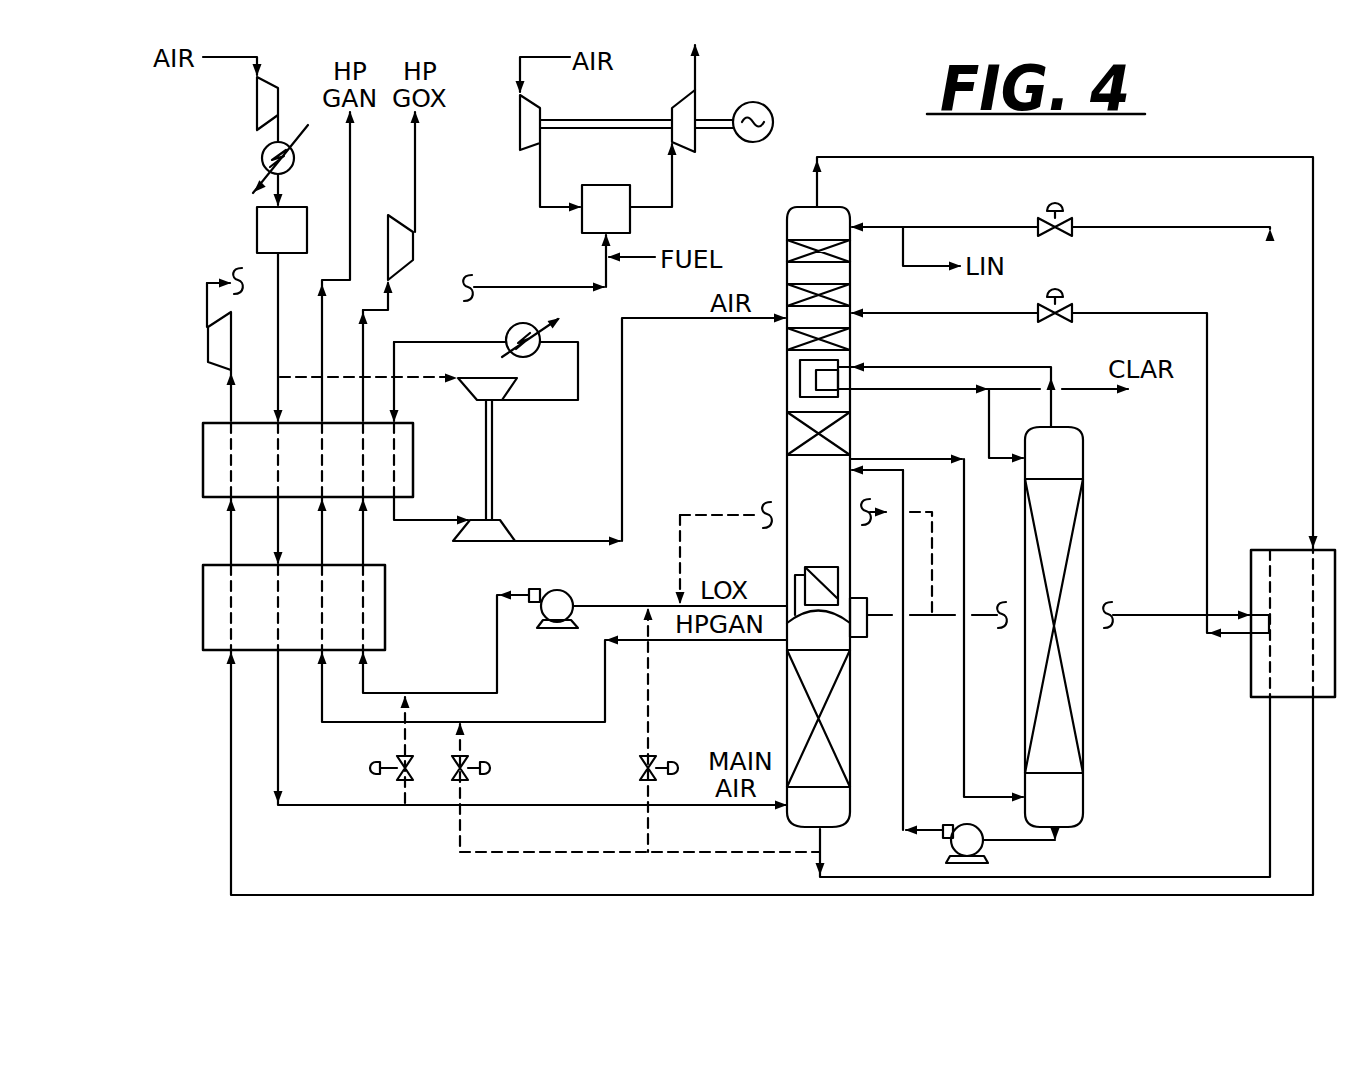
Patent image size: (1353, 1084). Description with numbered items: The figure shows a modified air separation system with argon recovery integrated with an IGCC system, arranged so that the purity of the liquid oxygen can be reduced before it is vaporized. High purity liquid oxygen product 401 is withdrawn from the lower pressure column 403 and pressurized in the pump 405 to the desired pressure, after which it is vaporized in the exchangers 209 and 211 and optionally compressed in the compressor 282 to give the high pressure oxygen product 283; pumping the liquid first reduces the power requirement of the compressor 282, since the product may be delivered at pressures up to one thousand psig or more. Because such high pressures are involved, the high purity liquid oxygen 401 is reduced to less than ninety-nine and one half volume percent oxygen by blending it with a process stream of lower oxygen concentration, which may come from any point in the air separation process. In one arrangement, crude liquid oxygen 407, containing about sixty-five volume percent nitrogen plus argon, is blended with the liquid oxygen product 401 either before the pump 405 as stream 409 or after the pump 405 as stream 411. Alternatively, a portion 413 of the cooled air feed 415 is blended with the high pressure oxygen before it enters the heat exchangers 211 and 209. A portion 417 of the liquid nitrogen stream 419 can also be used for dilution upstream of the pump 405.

The heat exchanger 209 is at (200, 432).
The heat exchanger 211 is at (385, 592).
The compressor 282 is at (415, 241).
The high pressure oxygen product 283 is at (416, 176).
The high purity liquid oxygen product 401 is at (660, 604).
The lower pressure column 403 is at (785, 466).
The pump 405 is at (553, 629).
The crude liquid oxygen 407 is at (762, 851).
The stream 409 is at (655, 690).
The stream 411 is at (468, 745).
The portion of cooled air feed 413 is at (403, 745).
The cooled air feed 415 is at (343, 810).
The portion of liquid nitrogen stream 417 is at (930, 512).
The liquid nitrogen stream 419 is at (924, 620).